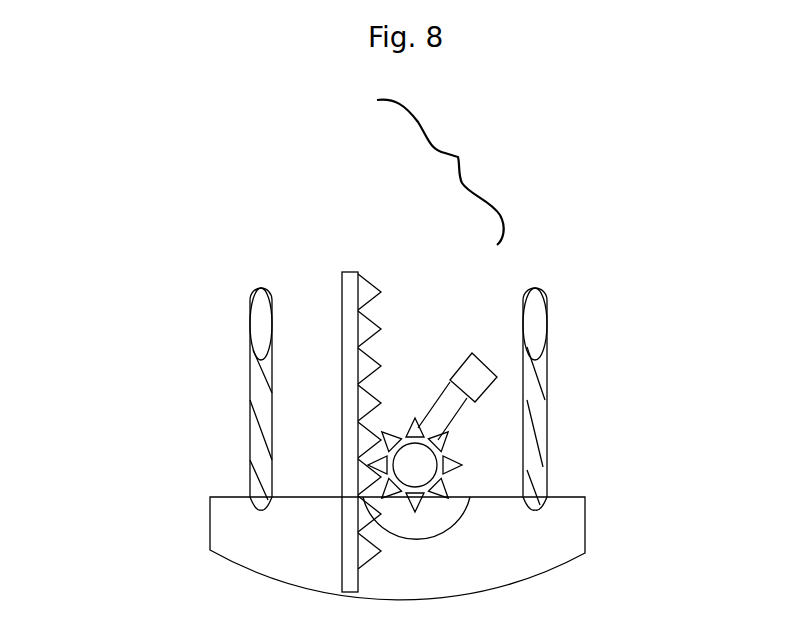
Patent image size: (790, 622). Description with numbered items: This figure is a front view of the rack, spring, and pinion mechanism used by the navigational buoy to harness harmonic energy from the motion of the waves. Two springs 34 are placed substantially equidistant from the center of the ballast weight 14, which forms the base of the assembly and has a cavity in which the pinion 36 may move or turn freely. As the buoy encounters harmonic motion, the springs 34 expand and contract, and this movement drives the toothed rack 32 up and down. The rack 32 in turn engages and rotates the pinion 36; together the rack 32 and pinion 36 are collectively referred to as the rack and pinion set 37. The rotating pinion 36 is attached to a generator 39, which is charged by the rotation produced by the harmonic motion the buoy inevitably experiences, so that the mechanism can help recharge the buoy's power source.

The ballast weight 14 is at (585, 530).
The rack 32 is at (357, 276).
The springs 34 is at (250, 398).
The pinion 36 is at (415, 420).
The rack and pinion set 37 is at (445, 172).
The generator 39 is at (474, 352).